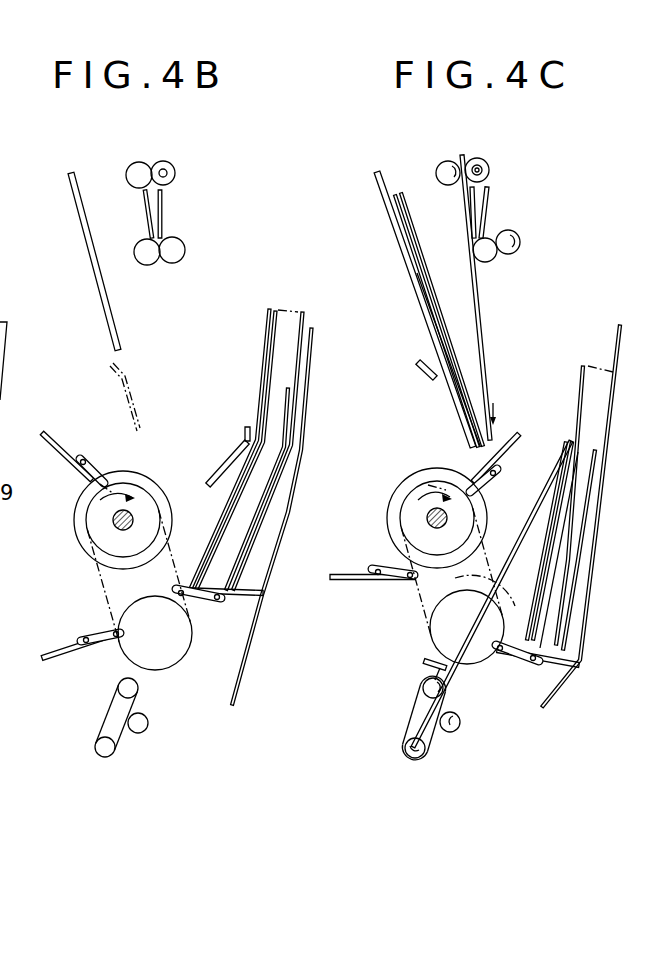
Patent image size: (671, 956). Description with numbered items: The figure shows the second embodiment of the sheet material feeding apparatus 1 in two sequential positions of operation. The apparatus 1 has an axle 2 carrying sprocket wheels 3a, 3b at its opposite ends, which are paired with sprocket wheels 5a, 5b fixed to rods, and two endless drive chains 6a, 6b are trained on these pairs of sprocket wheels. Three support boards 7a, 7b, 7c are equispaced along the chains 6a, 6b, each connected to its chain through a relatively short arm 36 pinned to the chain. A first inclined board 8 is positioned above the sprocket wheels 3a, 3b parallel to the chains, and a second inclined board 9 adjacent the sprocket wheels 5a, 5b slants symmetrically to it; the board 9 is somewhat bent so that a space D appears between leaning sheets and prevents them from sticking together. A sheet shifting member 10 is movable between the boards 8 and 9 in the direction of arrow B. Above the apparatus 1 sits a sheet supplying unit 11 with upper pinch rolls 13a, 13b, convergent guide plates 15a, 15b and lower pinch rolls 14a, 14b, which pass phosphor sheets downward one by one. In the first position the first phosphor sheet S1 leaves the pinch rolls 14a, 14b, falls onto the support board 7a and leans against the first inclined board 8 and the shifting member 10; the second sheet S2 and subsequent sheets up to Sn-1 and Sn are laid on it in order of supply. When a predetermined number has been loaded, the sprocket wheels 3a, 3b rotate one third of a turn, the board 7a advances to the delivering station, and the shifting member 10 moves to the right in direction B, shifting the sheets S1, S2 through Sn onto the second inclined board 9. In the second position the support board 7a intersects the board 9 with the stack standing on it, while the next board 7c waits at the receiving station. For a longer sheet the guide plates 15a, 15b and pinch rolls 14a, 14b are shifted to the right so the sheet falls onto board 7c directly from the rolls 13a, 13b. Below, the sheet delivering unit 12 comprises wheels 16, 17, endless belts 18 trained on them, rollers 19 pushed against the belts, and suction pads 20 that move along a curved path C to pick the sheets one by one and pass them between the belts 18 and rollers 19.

In FIG. 4B, the sheet material feeding apparatus 1 is at (89, 405).
In FIG. 4B, the axle 2 is at (133, 520).
In FIG. 4C, the axle 2 is at (428, 518).
In FIG. 4B, the sprocket wheel 3a is at (88, 521).
In FIG. 4C, the sprocket wheel 3a is at (412, 506).
In FIG. 4B, the sprocket wheel 3b is at (100, 555).
In FIG. 4C, the sprocket wheel 3b is at (407, 495).
In FIG. 4B, the sprocket wheel 5a is at (164, 655).
In FIG. 4C, the sprocket wheel 5a is at (417, 627).
In FIG. 4B, the sprocket wheel 5b is at (170, 663).
In FIG. 4C, the sprocket wheel 5b is at (422, 613).
In FIG. 4B, the endless drive chain 6a is at (102, 576).
In FIG. 4C, the endless drive chain 6a is at (529, 572).
In FIG. 4B, the endless drive chain 6b is at (100, 590).
In FIG. 4C, the endless drive chain 6b is at (532, 557).
In FIG. 4B, the support board 7a is at (248, 587).
In FIG. 4C, the support board 7a is at (578, 663).
In FIG. 4B, the support board 7b is at (57, 659).
In FIG. 4C, the support board 7b is at (345, 580).
In FIG. 4B, the support board 7c is at (61, 442).
In FIG. 4C, the support board 7c is at (517, 443).
In FIG. 4B, the first inclined board 8 is at (82, 229).
In FIG. 4C, the first inclined board 8 is at (395, 247).
In FIG. 4B, the second inclined board 9 is at (288, 512).
In FIG. 4C, the second inclined board 9 is at (578, 600).
In FIG. 4B, the sheet shifting member 10 is at (219, 463).
In FIG. 4C, the sheet shifting member 10 is at (440, 400).
In FIG. 4B, the sheet supplying unit 11 is at (180, 217).
In FIG. 4C, the sheet supplying unit 11 is at (506, 215).
In FIG. 4B, the sheet delivering unit 12 is at (93, 724).
In FIG. 4C, the upper pinch roll 13a is at (440, 163).
In FIG. 4C, the upper pinch roll 13b is at (487, 160).
In FIG. 4C, the lower pinch roll 14a is at (488, 258).
In FIG. 4C, the lower pinch roll 14b is at (520, 245).
In FIG. 4C, the guide plate 15a is at (470, 197).
In FIG. 4C, the guide plate 15b is at (493, 197).
In FIG. 4C, the wheels 16 is at (425, 688).
In FIG. 4C, the wheels 17 is at (408, 748).
In FIG. 4C, the endless belts 18 is at (412, 715).
In FIG. 4C, the rollers 19 is at (462, 723).
In FIG. 4C, the suction pads 20 is at (425, 663).
In FIG. 4B, the arm 36 is at (98, 469).
In FIG. 4C, the arm 36 is at (493, 480).
In FIG. 4B, the rotation direction A is at (98, 495).
In FIG. 4C, the rotation direction A is at (434, 485).
In FIG. 4B, the arrow B is at (218, 436).
In FIG. 4C, the curved path C is at (517, 599).
In FIG. 4C, the space D is at (567, 500).
In FIG. 4B, the first phosphor sheet S1 is at (263, 358).
In FIG. 4C, the first phosphor sheet S1 is at (548, 448).
In FIG. 4B, the second phosphor sheet S2 is at (262, 392).
In FIG. 4C, the second phosphor sheet S2 is at (549, 527).
In FIG. 4B, the n-th phosphor sheet Sn is at (300, 367).
In FIG. 4C, the n-th phosphor sheet Sn is at (608, 435).
In FIG. 4B, the (n-1)-th sheet Sn-1 is at (292, 399).
In FIG. 4C, the (n-1)-th sheet Sn-1 is at (598, 470).